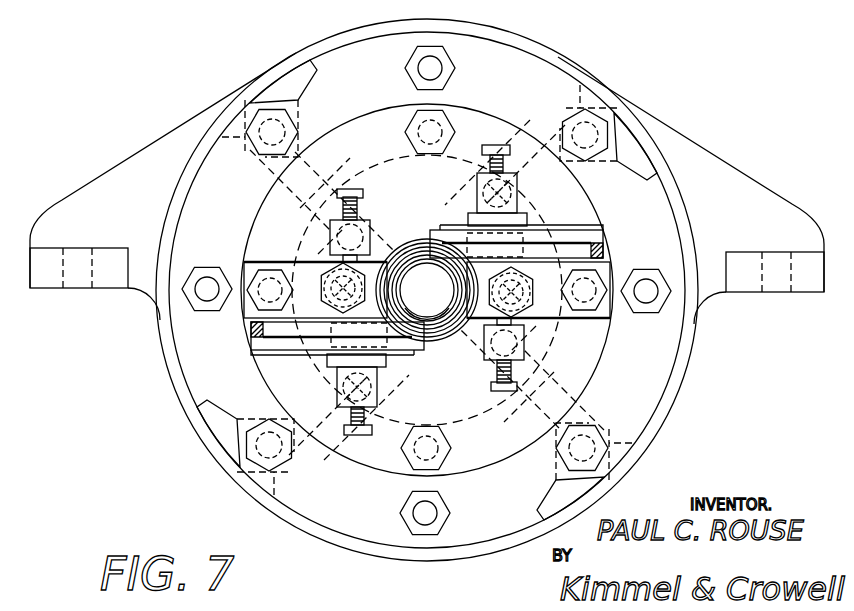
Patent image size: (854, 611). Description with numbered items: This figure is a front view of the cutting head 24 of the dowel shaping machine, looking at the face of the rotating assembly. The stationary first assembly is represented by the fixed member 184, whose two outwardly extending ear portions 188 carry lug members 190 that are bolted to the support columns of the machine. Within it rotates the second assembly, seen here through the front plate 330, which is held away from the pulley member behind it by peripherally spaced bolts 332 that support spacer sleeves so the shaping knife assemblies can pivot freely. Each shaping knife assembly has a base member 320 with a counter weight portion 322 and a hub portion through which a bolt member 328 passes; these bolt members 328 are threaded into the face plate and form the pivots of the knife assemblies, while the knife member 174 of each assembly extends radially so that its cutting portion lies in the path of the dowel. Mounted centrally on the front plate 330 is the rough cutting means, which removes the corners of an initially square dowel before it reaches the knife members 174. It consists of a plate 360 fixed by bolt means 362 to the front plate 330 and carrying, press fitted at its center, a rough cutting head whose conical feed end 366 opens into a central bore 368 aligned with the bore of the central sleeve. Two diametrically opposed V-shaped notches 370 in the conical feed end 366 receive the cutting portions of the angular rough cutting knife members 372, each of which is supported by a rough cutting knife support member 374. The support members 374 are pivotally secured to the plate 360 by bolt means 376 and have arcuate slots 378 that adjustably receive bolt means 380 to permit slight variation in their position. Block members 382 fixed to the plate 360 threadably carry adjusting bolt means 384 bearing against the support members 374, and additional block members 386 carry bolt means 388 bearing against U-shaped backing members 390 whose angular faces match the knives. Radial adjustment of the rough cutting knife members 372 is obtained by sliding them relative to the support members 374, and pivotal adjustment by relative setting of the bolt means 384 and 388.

The cutting head 24 is at (158, 390).
The knife member 174 is at (318, 201).
The fixed member 184 is at (568, 71).
The ear portions 188 is at (131, 158).
The lug members 190 is at (55, 252).
The base member 320 is at (222, 137).
The counter weight portion 322 is at (262, 83).
The bolt members 328 is at (257, 157).
The front plate 330 is at (662, 348).
The additional bolts 332 is at (410, 58).
The plate 360 is at (591, 352).
The bolt means 362 is at (405, 128).
The conical feed end 366 is at (392, 250).
The central bore 368 is at (405, 270).
The V-shaped notches 370 is at (440, 317).
The rough cutting knife member 372 is at (588, 226).
The rough cutting knife support members 374 is at (600, 246).
The bolt means 376 is at (269, 268).
The arcuate slots 378 is at (326, 293).
The bolt means 380 is at (325, 285).
The block members 382 is at (368, 221).
The adjusting bolt means 384 is at (362, 192).
The additional block members 386 is at (518, 188).
The bolt means 388 is at (488, 146).
The U-shaped backing members 390 is at (528, 217).